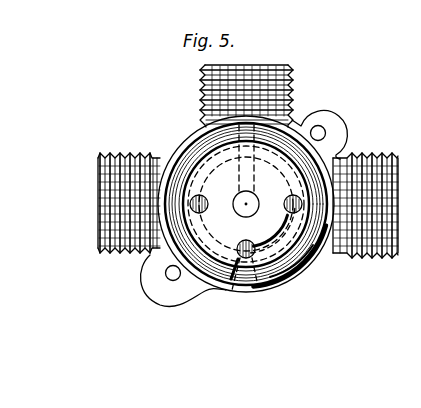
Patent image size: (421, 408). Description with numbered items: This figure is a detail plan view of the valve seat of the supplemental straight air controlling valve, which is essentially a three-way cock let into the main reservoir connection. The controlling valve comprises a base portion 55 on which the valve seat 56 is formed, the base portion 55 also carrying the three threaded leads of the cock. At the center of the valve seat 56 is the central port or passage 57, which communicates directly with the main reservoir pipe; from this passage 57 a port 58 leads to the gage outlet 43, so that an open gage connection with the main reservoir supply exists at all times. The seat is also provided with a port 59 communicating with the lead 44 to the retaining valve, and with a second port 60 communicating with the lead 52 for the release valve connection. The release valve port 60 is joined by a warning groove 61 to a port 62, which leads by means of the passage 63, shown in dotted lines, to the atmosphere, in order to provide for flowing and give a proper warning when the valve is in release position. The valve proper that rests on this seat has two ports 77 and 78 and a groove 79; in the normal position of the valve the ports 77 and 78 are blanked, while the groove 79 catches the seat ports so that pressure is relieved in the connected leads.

The gage lead 43 is at (200, 72).
The retaining valve lead 44 is at (99, 206).
The release valve lead 52 is at (397, 168).
The base portion 55 is at (311, 262).
The valve seat 56 is at (259, 157).
The central port or passage 57 is at (239, 212).
The gage port 58 is at (246, 204).
The retaining valve port 59 is at (209, 190).
The release valve port 60 is at (293, 196).
The warning groove 61 is at (271, 230).
The atmospheric port 62 is at (240, 258).
The atmospheric passage 63 is at (249, 262).
The valve port 77 is at (319, 135).
The valve port 78 is at (183, 152).
The valve groove 79 is at (302, 283).